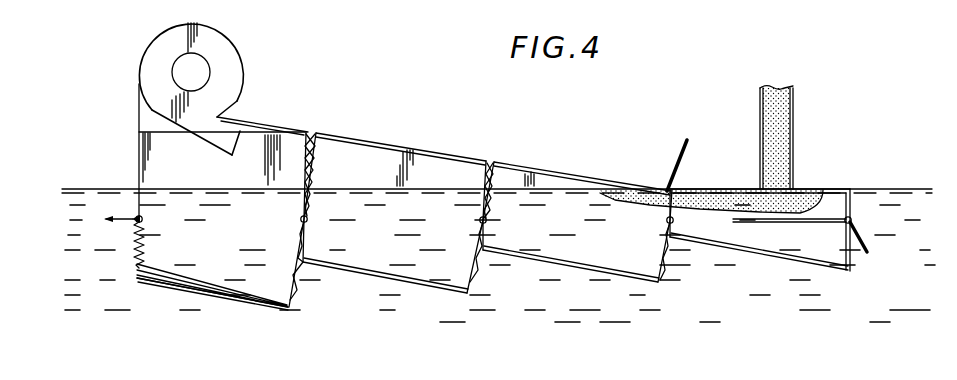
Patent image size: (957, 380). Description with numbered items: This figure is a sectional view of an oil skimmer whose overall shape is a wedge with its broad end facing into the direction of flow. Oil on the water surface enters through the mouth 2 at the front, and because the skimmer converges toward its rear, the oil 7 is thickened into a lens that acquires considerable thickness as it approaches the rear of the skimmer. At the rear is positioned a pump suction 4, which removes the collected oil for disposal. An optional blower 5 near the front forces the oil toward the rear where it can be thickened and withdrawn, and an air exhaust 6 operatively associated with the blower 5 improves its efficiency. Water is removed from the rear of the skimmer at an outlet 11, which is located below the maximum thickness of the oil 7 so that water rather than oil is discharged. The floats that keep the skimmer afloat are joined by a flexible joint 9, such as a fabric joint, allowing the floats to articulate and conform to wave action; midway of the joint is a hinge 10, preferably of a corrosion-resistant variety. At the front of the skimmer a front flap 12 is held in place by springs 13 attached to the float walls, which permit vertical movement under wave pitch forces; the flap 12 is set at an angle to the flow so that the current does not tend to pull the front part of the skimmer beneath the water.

The mouth 2 is at (116, 156).
The pump suction 4 is at (793, 117).
The blower 5 is at (230, 62).
The air exhaust 6 is at (671, 142).
The oil 7 is at (715, 198).
The flexible joint 9 is at (318, 145).
The hinge 10 is at (308, 220).
The outlet 11 is at (868, 243).
The front flap 12 is at (207, 297).
The springs 13 is at (132, 242).